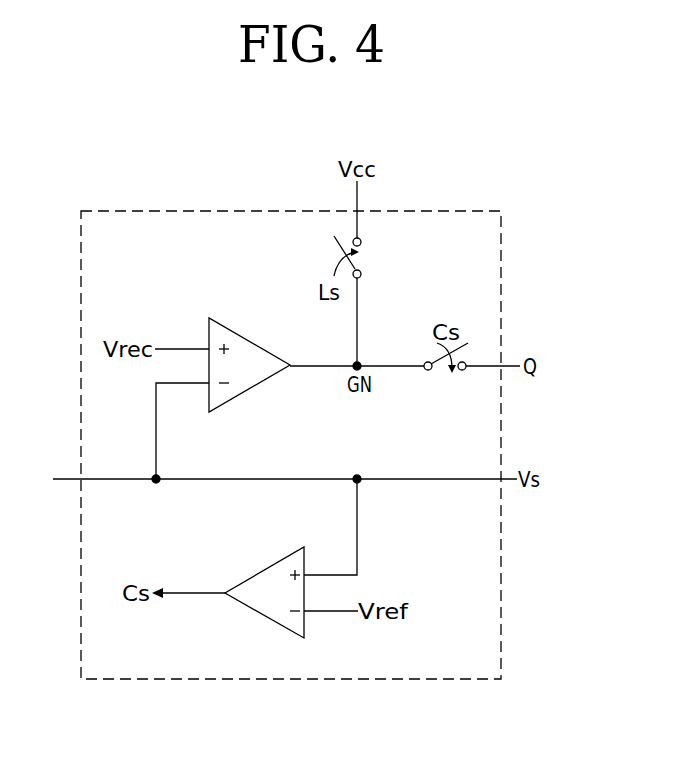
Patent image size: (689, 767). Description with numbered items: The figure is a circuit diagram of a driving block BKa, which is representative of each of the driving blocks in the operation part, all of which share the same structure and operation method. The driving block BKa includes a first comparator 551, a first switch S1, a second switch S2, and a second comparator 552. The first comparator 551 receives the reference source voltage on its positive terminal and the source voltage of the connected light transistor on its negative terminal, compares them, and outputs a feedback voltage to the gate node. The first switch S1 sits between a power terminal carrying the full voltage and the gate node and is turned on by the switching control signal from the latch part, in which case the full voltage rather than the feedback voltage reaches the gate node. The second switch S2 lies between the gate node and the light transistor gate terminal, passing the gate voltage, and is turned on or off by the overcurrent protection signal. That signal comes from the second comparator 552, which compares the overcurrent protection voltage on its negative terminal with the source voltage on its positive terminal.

The first comparator 551 is at (232, 324).
The second comparator 552 is at (288, 553).
The first switch S1 is at (367, 261).
The second switch S2 is at (446, 372).
The driving block BKa is at (558, 150).